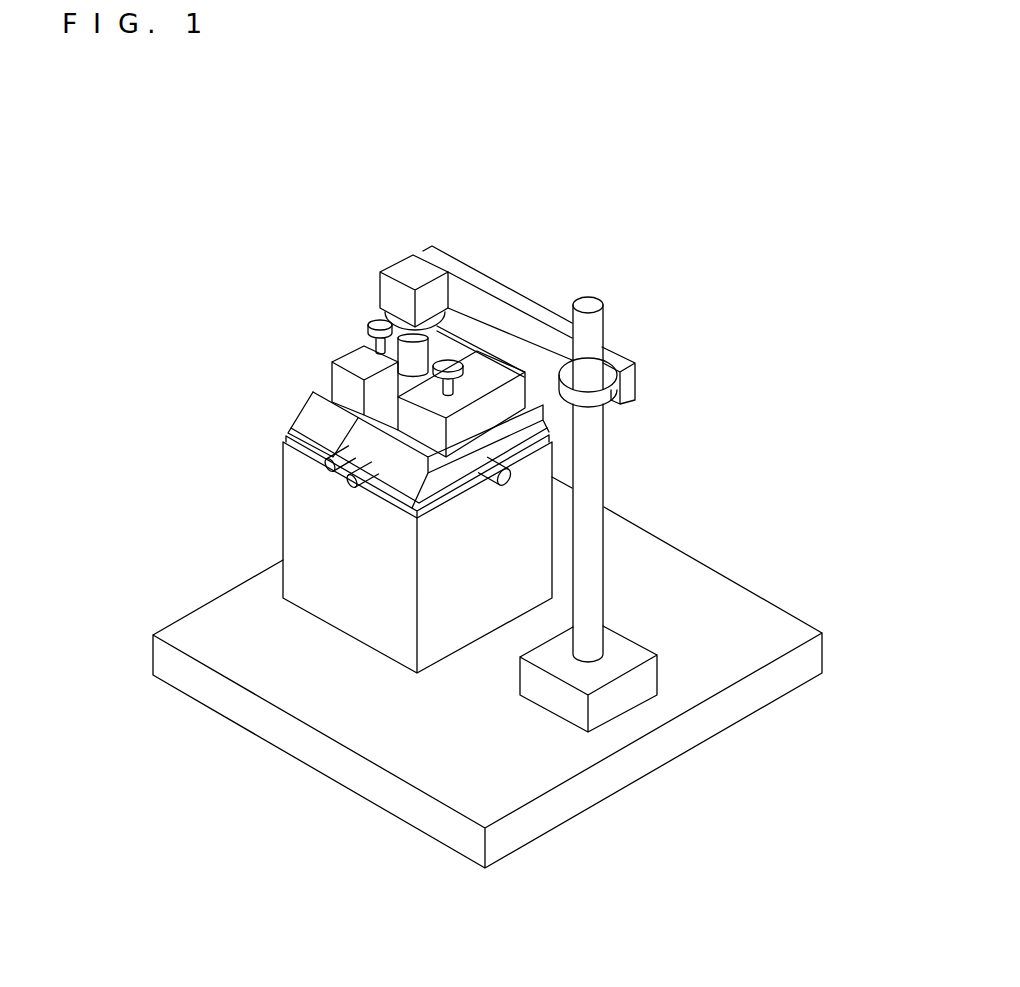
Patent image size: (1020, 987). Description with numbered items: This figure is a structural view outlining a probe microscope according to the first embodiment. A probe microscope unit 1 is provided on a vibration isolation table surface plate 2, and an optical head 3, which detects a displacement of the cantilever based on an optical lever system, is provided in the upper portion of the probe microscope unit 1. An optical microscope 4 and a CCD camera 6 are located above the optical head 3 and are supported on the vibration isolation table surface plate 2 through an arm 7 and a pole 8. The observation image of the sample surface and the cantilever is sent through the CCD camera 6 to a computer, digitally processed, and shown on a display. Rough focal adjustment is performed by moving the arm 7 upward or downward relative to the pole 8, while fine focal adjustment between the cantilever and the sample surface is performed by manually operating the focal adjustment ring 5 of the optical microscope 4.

The probe microscope unit 1 is at (298, 475).
The vibration isolation table surface plate 2 is at (330, 697).
The optical head 3 is at (345, 377).
The optical microscope 4 is at (408, 347).
The focal adjustment ring 5 is at (380, 310).
The CCD camera 6 is at (412, 262).
The arm 7 is at (503, 295).
The pole 8 is at (590, 335).